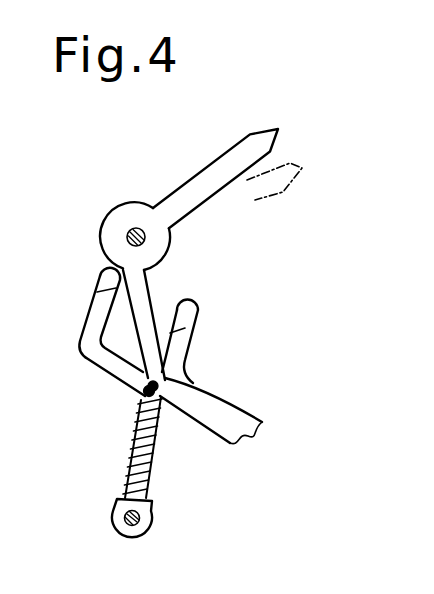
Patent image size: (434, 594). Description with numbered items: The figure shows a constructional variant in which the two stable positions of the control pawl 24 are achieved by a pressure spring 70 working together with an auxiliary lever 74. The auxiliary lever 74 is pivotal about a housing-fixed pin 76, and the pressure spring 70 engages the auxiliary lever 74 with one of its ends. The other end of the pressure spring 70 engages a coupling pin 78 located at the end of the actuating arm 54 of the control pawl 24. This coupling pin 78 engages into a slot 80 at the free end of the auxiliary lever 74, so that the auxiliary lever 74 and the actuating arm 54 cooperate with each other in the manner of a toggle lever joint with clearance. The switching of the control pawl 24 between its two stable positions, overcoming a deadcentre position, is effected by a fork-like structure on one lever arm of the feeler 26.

The control pawl 24 is at (166, 199).
The feeler 26 is at (244, 445).
The actuating arm 54 is at (143, 293).
The pressure spring 70 is at (135, 447).
The auxiliary lever 74 is at (132, 440).
The housing-fixed pin 76 is at (152, 515).
The coupling pin 78 is at (160, 383).
The slot 80 is at (143, 397).